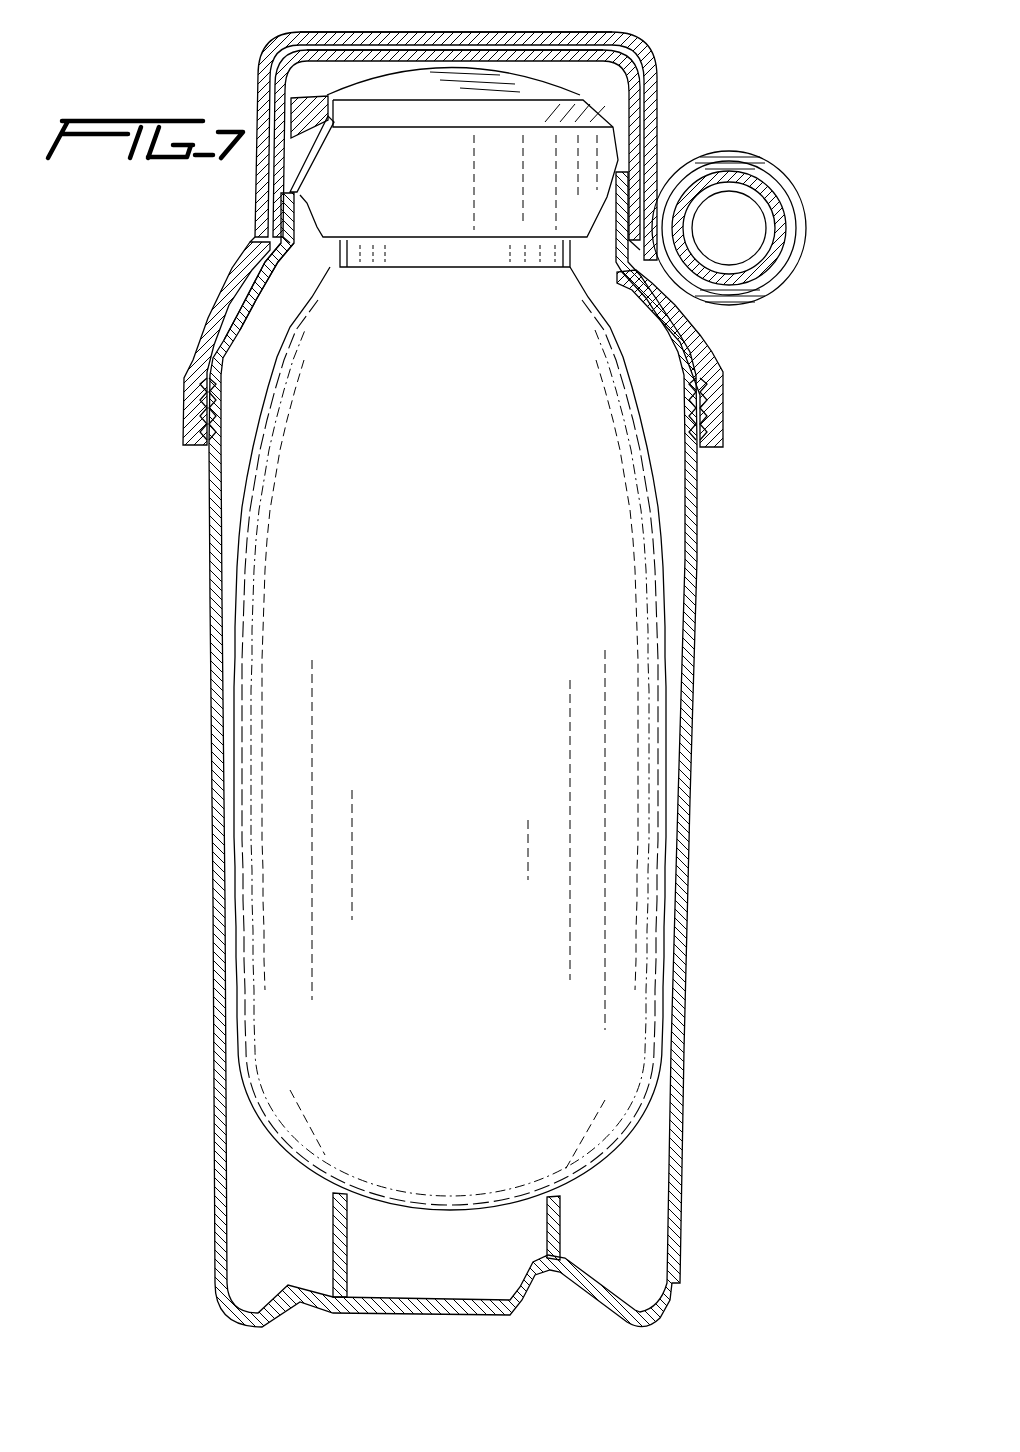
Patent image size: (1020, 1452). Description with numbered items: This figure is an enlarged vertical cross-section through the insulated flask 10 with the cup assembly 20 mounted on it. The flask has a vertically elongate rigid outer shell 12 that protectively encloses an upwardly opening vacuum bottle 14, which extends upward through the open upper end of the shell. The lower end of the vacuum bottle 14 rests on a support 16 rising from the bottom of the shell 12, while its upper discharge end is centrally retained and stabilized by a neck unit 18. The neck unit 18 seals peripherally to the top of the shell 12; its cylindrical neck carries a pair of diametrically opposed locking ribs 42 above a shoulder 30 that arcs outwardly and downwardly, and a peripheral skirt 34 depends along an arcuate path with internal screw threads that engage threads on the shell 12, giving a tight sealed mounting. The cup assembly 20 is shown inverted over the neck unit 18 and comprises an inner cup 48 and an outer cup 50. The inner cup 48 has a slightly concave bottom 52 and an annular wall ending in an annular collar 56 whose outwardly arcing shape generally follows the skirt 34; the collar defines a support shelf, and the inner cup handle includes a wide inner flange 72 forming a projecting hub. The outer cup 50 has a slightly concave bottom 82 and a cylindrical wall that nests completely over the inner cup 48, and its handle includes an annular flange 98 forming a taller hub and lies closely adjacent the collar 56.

The insulated flask 10 is at (158, 311).
The outer shell 12 is at (205, 605).
The vacuum bottle 14 is at (262, 712).
The support 16 is at (553, 1230).
The neck unit 18 is at (345, 148).
The cup assembly 20 is at (662, 94).
The shoulder 30 is at (252, 290).
The peripheral skirt 34 is at (190, 410).
The locking ribs 42 is at (290, 233).
The inner cup 48 is at (646, 142).
The outer cup 50 is at (647, 51).
The bottom 52 is at (482, 57).
The annular collar 56 is at (206, 321).
The inner flange 72 is at (722, 272).
The bottom 82 is at (413, 42).
The annular flange 98 is at (780, 237).